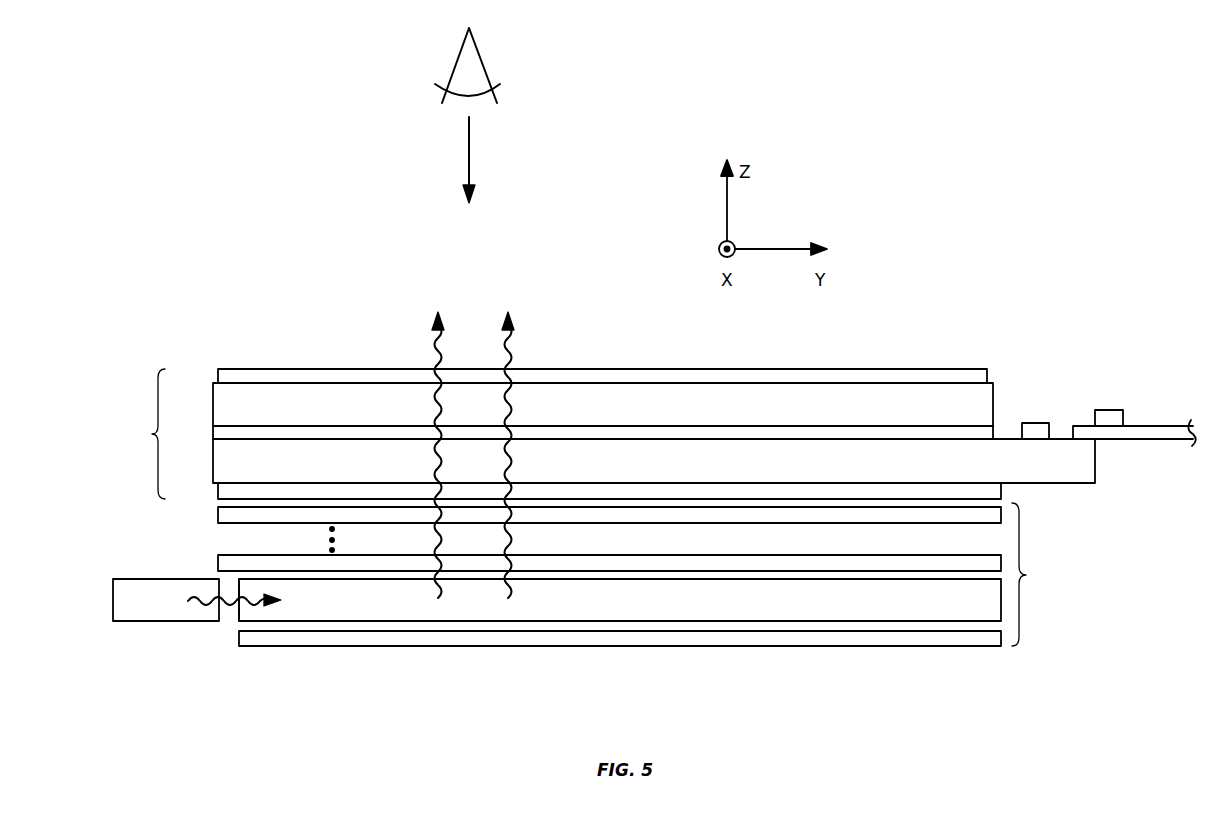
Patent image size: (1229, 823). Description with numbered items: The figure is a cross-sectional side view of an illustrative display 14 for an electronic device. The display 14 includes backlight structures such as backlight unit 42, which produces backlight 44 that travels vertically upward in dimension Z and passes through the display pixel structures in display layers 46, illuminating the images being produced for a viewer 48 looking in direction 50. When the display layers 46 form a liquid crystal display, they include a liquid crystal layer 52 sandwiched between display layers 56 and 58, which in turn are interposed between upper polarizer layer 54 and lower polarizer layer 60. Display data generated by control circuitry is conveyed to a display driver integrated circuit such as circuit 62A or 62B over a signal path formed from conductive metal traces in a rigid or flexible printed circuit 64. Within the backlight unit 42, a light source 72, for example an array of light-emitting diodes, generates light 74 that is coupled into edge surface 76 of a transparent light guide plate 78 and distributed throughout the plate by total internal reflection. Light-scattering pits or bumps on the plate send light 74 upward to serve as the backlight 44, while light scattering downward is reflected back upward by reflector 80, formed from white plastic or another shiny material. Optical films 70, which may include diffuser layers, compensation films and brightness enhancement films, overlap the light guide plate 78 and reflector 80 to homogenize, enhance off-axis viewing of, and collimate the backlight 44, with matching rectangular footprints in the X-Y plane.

The display 14 is at (1022, 170).
The backlight unit 42 is at (1032, 574).
The backlight 44 is at (508, 350).
The display layers 46 is at (147, 434).
The viewer 48 is at (483, 62).
The direction 50 is at (469, 165).
The liquid crystal layer 52 is at (288, 432).
The upper polarizer layer 54 is at (240, 375).
The display layer 56 is at (220, 402).
The display layer 58 is at (220, 455).
The lower polarizer layer 60 is at (218, 492).
The display driver integrated circuit 62A is at (1033, 423).
The display driver integrated circuit 62B is at (1112, 410).
The printed circuit 64 is at (1148, 433).
The optical films 70 is at (218, 565).
The light source 72 is at (113, 601).
The light 74 is at (205, 598).
The edge surface 76 is at (237, 612).
The light guide plate 78 is at (325, 613).
The reflector 80 is at (410, 640).